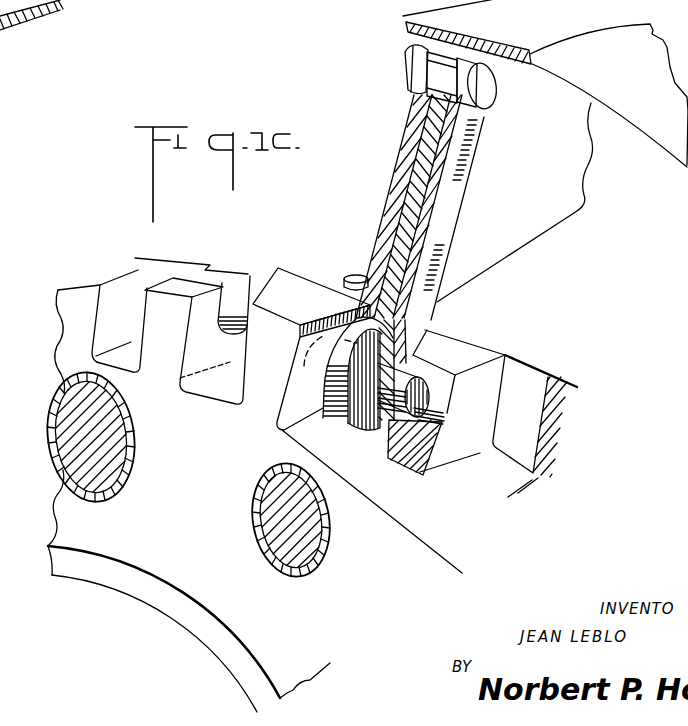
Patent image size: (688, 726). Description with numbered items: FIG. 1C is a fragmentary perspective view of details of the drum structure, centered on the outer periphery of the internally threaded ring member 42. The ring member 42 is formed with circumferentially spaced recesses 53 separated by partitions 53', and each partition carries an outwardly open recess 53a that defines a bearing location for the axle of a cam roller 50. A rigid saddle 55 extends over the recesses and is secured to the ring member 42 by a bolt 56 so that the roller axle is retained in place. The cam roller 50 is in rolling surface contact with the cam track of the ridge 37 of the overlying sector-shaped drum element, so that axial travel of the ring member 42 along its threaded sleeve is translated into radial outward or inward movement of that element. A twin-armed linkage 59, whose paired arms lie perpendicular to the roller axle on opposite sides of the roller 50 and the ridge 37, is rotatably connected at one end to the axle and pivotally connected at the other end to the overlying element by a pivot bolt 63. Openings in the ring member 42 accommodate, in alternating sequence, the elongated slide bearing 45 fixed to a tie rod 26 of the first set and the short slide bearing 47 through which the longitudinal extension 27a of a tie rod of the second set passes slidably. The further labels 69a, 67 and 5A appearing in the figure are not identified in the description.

The hatched band 69a is at (63, 2).
The member 67 is at (0, 43).
The ridge 37 is at (549, 133).
The pivot bolt 63 is at (426, 88).
The twin-armed linkage 59 is at (404, 163).
The bolt 56 is at (362, 273).
The saddle 55 is at (313, 295).
The recess 53 is at (318, 377).
The partition 53' is at (274, 398).
The outwardly open recess 53a is at (447, 413).
The cam roller 50 is at (362, 420).
The clevis pin 5A is at (402, 373).
The elongated slide bearing 45 is at (72, 385).
The tie rod 26 is at (63, 415).
The short slide bearing 47 is at (307, 575).
The longitudinal extension 27a is at (273, 510).
The ring member 42 is at (258, 635).